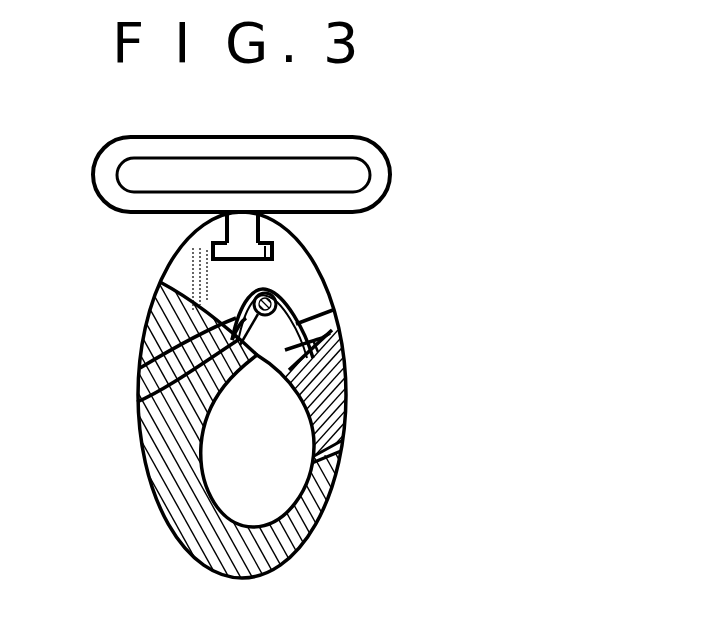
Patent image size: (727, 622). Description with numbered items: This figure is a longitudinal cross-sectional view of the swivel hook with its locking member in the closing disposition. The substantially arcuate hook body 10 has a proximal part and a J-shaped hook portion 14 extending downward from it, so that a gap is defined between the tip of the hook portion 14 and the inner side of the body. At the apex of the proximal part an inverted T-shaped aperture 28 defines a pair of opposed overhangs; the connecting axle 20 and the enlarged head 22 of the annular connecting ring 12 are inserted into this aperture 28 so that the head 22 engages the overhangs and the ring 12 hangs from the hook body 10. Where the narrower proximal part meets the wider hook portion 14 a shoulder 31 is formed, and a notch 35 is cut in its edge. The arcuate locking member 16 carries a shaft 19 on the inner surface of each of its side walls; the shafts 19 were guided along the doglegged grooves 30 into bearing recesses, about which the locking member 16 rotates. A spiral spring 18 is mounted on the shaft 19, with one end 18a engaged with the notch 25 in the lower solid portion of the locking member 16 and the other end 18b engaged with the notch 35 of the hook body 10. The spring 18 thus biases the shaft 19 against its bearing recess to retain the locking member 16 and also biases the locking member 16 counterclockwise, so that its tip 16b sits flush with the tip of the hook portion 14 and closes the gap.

The hook body 10 is at (148, 501).
The connecting ring 12 is at (360, 135).
The J-shaped hook portion 14 is at (208, 580).
The locking member 16 is at (346, 416).
The tip of the locking member 16b is at (344, 448).
The spiral spring 18 is at (300, 290).
The one end of the spring 18a is at (332, 320).
The other end of the spring 18b is at (228, 345).
The shaft 19 is at (278, 303).
The connecting axle 20 is at (226, 222).
The enlarged head 22 is at (162, 283).
The notch 25 is at (345, 343).
The inverted T-shaped aperture 28 is at (213, 243).
The doglegged groove 30 is at (345, 378).
The shoulder 31 is at (178, 322).
The notch 35 is at (236, 360).